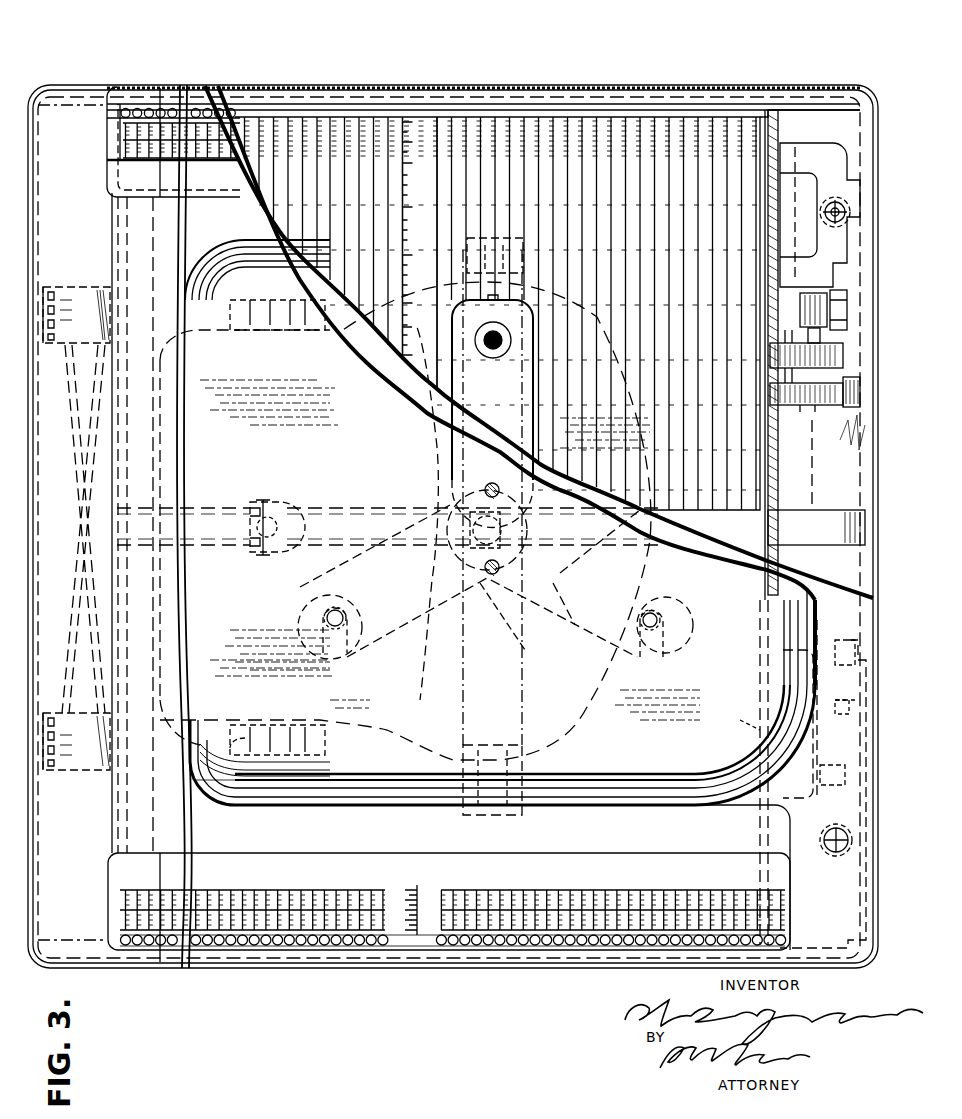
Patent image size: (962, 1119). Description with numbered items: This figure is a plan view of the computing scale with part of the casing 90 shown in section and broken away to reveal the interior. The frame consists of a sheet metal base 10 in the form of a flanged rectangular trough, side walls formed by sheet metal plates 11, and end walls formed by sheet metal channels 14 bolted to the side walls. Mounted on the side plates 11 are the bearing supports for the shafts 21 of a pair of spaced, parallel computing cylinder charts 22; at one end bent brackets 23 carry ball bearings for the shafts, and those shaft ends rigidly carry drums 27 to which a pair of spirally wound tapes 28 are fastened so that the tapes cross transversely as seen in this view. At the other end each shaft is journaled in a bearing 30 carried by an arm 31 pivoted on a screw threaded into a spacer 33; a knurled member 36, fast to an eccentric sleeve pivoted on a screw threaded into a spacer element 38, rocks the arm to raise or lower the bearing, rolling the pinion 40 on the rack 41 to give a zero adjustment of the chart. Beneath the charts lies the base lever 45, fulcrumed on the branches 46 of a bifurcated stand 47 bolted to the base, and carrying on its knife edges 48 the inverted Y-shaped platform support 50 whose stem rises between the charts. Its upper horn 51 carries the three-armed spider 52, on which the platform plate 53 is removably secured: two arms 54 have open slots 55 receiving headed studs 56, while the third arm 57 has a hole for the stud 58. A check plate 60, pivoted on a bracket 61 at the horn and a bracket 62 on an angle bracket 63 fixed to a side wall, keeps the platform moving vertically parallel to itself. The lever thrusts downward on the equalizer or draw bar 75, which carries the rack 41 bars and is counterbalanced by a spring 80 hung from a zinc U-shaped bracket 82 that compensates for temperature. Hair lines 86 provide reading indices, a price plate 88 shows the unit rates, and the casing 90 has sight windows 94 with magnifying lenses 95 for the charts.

The sheet metal base 10 is at (828, 127).
The sheet metal plates 11 is at (110, 213).
The sheet metal channels 14 is at (451, 108).
The shafts 21 is at (787, 287).
The computing drum or cylinder charts 22 is at (615, 150).
The bent brackets 23 is at (43, 283).
The drums 27 is at (85, 287).
The tapes 28 is at (70, 560).
The bearing 30 is at (840, 305).
The arm 31 is at (845, 335).
The spacer 33 is at (808, 400).
The knurled member 36 is at (845, 418).
The spacer element 38 is at (792, 400).
The pinion 40 is at (807, 293).
The rack 41 is at (812, 340).
The base lever 45 is at (405, 790).
The branches 46 is at (235, 300).
The bifurcated stand 47 is at (240, 738).
The knife edges 48 is at (530, 795).
The platform support 50 is at (520, 715).
The horn 51 is at (560, 590).
The spider 52 is at (505, 612).
The platform plate 53 is at (357, 792).
The arms 54 is at (400, 630).
The open slots 55 is at (325, 640).
The studs 56 is at (318, 605).
The arm 57 is at (435, 425).
The stud 58 is at (498, 352).
The check plate 60 is at (377, 520).
The bracket 61 is at (545, 570).
The bracket 62 is at (250, 512).
The angle bracket 63 is at (216, 508).
The equalizer or draw bar 75 is at (812, 445).
The counterbalancing spring 80 is at (828, 203).
The U-shaped bracket 82 is at (842, 172).
The hair lines 86 is at (227, 140).
The price plate 88 is at (160, 108).
The casing 90 is at (731, 88).
The sight windows 94 is at (188, 110).
The lens 95 is at (428, 940).